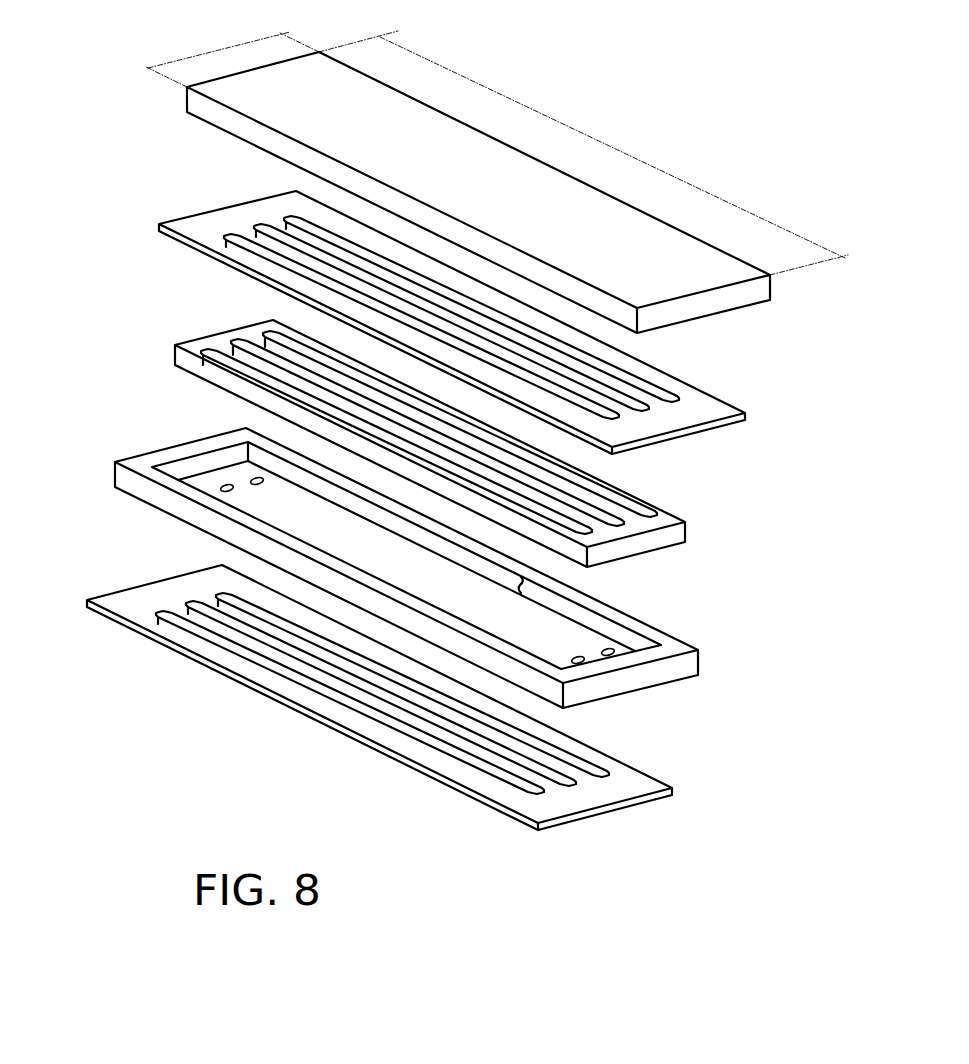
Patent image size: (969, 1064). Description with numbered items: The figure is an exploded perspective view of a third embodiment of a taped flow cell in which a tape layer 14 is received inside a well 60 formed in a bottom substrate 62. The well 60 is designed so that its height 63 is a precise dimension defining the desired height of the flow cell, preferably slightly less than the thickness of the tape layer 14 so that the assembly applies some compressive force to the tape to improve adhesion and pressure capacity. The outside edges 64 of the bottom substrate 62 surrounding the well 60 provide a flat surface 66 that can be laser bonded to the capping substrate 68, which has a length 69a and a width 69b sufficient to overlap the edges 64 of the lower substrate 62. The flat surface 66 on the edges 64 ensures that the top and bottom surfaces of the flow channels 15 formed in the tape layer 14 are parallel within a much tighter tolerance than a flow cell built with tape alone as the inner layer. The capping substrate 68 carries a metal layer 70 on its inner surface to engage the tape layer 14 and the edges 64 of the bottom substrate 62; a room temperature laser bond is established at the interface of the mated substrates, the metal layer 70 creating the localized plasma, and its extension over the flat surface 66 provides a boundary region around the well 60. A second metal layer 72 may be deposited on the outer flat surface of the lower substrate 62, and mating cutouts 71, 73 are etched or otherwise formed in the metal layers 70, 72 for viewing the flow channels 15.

The capping substrate 68 is at (685, 280).
The length 69a is at (597, 136).
The width 69b is at (221, 45).
The metal layer 70 is at (720, 405).
The mating cutouts 71 is at (643, 388).
The tape layer 14 is at (683, 520).
The flow channels 15 is at (620, 505).
The outside edges 64 is at (143, 460).
The flat surface 66 is at (195, 440).
The well 60 is at (576, 642).
The bottom substrate 62 is at (700, 662).
The height 63 is at (519, 586).
The second metal layer 72 is at (645, 790).
The mating cutouts 73 is at (580, 765).